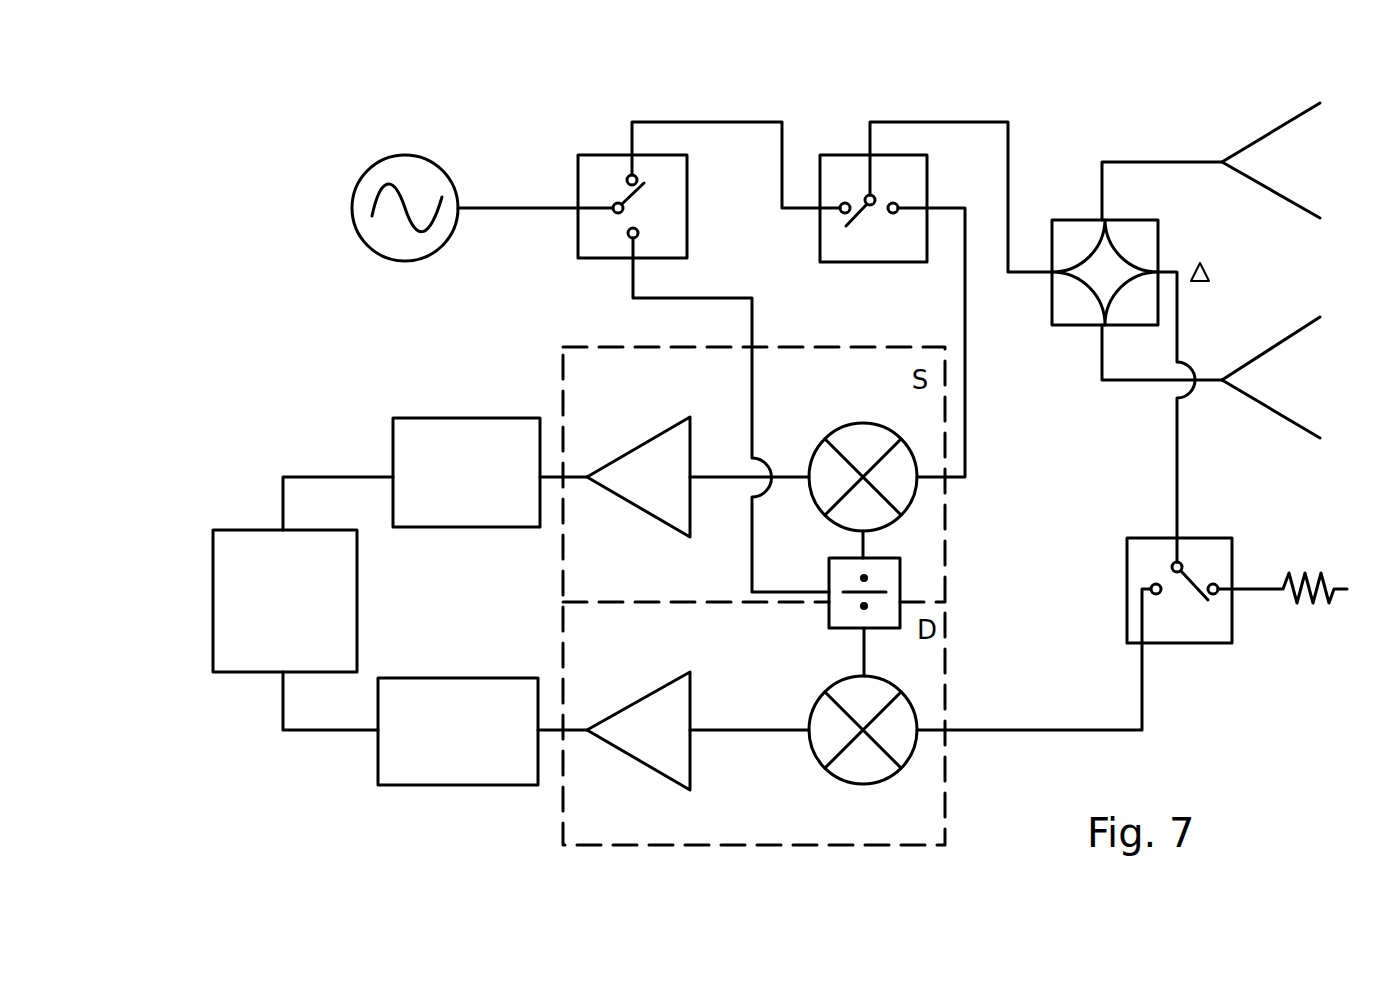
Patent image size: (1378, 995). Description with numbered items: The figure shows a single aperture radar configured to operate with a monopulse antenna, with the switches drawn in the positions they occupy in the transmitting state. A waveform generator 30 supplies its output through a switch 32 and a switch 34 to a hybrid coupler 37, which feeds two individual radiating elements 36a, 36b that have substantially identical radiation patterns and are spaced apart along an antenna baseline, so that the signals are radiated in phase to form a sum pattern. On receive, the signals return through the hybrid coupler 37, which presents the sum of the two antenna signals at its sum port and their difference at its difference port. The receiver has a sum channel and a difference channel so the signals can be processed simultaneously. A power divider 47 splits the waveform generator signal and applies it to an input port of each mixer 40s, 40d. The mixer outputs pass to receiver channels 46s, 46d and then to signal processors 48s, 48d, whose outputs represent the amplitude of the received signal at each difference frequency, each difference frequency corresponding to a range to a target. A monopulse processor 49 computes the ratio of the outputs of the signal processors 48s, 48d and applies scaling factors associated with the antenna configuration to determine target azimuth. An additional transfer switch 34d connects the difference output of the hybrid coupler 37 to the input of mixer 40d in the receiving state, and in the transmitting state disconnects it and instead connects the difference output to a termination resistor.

The waveform generator 30 is at (398, 152).
The switch 32 is at (592, 152).
The switch 34 is at (840, 153).
The additional transfer switch 34d is at (1200, 645).
The radiating element 36a is at (1262, 135).
The radiating element 36b is at (1268, 412).
The hybrid coupler 37 is at (1065, 218).
The mixer 40s is at (810, 500).
The mixer 40d is at (817, 762).
The receiver channel 46s is at (633, 447).
The receiver channel 46d is at (633, 760).
The power divider 47 is at (833, 630).
The signal processor 48s is at (420, 416).
The signal processor 48d is at (378, 758).
The monopulse processor 49 is at (233, 528).